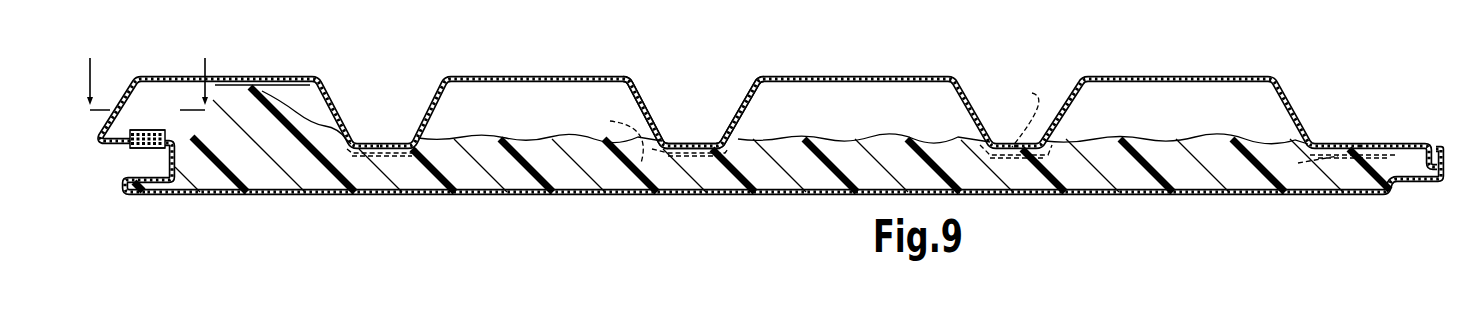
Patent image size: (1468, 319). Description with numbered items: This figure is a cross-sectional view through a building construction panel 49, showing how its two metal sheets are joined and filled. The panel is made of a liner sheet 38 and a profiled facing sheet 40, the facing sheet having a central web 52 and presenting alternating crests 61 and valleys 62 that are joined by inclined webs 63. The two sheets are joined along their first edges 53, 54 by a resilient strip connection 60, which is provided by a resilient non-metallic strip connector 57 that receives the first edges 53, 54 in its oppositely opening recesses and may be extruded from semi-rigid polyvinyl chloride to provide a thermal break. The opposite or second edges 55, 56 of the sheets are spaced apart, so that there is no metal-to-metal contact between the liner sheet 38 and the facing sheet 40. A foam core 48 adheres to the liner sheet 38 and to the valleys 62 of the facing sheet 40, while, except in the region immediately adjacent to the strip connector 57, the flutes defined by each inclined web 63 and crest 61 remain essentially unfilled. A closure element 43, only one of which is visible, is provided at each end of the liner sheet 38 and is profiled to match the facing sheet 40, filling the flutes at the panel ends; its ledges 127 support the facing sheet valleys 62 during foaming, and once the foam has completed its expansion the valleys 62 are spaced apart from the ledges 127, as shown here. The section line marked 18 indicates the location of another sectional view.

The section line 18- 18 is at (151, 70).
The liner sheet 38 is at (627, 195).
The facing sheet 40 is at (498, 74).
The closure element 43 is at (1151, 108).
The foam core 48 is at (773, 177).
The building construction panel 49 is at (1292, 66).
The central web 52 is at (334, 314).
The first edge 53 is at (150, 155).
The first edge 54 is at (148, 132).
The second edge 55 is at (1450, 138).
The second edge 56 is at (1428, 139).
The strip connector 57 is at (169, 132).
The resilient strip connection 60 is at (130, 149).
The crest 61 is at (895, 78).
The valley 62 is at (697, 146).
The inclined web 63 is at (748, 98).
The ledge 127 is at (392, 152).